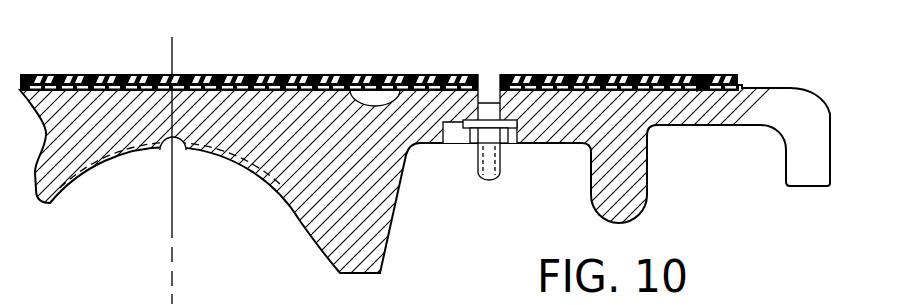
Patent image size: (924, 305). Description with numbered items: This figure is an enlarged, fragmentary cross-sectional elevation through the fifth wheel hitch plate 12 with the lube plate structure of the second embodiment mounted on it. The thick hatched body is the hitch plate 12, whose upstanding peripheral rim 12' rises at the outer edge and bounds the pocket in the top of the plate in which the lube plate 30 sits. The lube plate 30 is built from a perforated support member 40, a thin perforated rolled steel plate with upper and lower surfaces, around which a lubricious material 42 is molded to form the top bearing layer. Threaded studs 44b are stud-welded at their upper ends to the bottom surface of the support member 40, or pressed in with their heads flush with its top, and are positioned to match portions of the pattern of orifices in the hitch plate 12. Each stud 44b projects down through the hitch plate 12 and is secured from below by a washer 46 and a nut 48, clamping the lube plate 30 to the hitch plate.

The fifth wheel hitch plate 12 is at (435, 152).
The upstanding peripheral rim 12' is at (764, 50).
The lube plate 30 is at (697, 92).
The perforated support member 40 is at (563, 94).
The lubricious material 42 is at (639, 92).
The threaded stud 44b is at (492, 160).
The washer 46 is at (457, 133).
The nut 48 is at (478, 133).